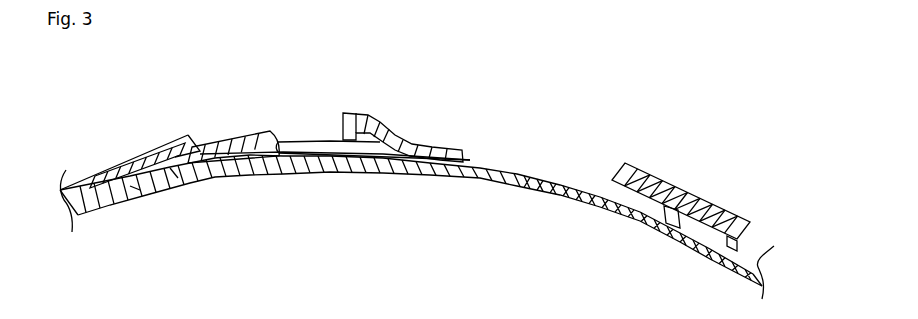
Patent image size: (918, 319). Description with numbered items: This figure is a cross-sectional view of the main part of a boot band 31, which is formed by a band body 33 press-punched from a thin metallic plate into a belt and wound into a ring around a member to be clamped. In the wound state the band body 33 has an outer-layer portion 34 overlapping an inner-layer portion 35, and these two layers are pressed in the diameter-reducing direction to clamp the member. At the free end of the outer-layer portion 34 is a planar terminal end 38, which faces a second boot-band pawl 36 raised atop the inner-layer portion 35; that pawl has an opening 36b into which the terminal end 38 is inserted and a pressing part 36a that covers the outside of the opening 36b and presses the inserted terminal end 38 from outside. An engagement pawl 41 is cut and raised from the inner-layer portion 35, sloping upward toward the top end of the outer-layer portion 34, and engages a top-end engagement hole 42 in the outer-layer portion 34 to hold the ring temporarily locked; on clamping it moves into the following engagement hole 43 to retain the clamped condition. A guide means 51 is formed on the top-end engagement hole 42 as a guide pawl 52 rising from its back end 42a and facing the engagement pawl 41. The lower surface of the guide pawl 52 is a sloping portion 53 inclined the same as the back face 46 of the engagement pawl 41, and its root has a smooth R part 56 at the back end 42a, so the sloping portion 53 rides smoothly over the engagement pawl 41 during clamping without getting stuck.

The boot band 31 is at (483, 126).
The band body 33 is at (545, 175).
The outer-layer portion 34 is at (98, 163).
The inner-layer portion 35 is at (636, 228).
The second boot-band pawl 36 is at (685, 212).
The pressing part 36a is at (641, 166).
The opening 36b is at (666, 228).
The terminal end 38 is at (443, 152).
The engagement pawl 41 is at (257, 160).
The top-end engagement hole 42 is at (168, 177).
The back end of the top-end engagement hole 42a is at (171, 182).
The following engagement hole 43 is at (70, 186).
The back face of the engagement pawl 46 is at (258, 132).
The guide means 51 is at (199, 117).
The guide pawl 52 is at (186, 134).
The sloping portion 53 is at (172, 183).
The R part 56 is at (138, 192).